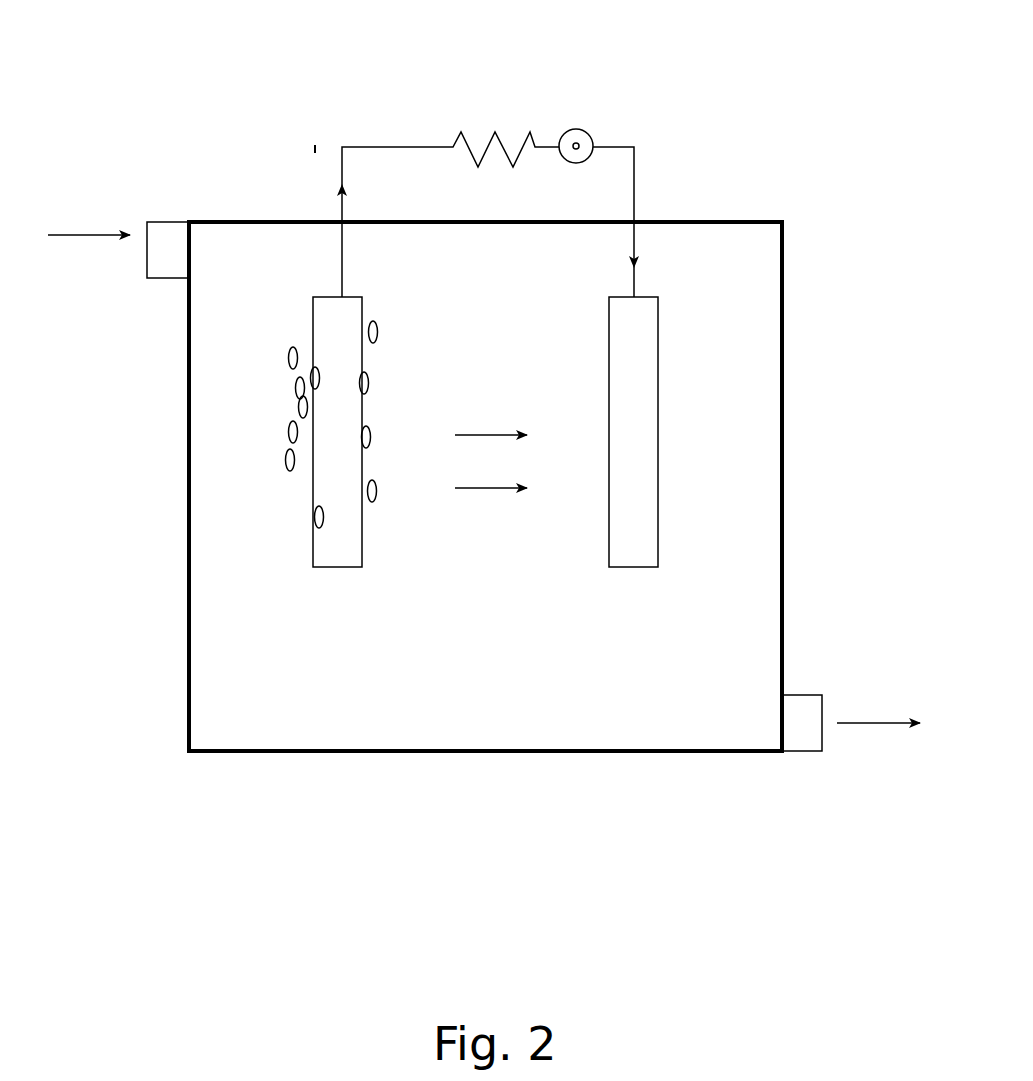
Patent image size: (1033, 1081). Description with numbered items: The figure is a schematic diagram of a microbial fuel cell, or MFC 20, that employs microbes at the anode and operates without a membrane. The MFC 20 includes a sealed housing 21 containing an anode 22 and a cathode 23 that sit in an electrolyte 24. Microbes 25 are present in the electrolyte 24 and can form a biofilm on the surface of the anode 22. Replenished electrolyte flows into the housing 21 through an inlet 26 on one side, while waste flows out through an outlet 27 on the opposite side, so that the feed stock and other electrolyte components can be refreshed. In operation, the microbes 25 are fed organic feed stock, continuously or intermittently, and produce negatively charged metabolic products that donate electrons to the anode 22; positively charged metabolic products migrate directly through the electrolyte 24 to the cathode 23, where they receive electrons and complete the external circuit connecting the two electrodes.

The microbial fuel cell (MFC) 20 is at (727, 173).
The sealed housing 21 is at (789, 331).
The anode 22 is at (316, 575).
The cathode 23 is at (665, 492).
The electrolyte 24 is at (497, 675).
The microbes 25 is at (290, 408).
The inlet 26 is at (140, 288).
The outlet 27 is at (830, 690).